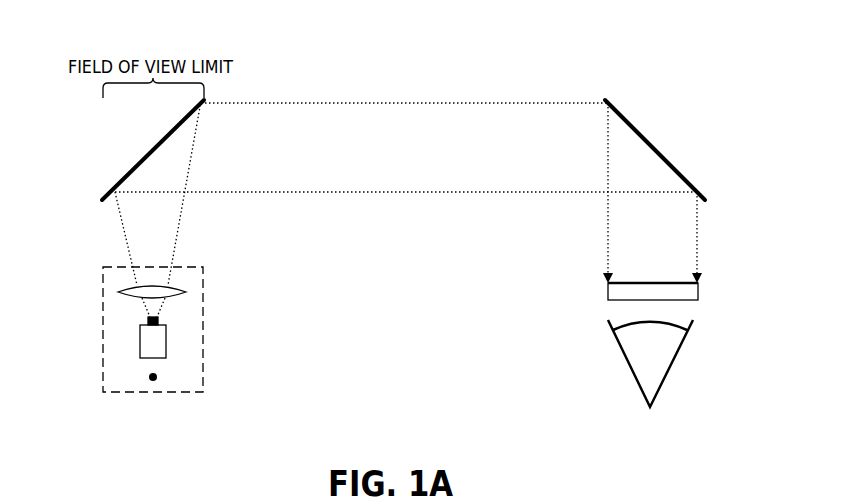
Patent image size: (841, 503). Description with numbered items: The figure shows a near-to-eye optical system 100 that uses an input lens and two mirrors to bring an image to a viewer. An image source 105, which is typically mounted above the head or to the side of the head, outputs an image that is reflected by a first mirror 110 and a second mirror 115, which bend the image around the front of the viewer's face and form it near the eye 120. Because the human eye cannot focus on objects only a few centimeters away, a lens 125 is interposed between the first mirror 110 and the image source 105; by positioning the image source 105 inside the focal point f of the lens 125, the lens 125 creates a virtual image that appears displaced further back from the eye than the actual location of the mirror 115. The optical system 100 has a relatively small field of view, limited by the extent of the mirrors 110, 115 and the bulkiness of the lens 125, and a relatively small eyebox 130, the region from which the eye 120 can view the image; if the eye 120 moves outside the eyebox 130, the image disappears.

The near-to-eye optical system 100 is at (410, 248).
The image source 105 is at (140, 342).
The first mirror 110 is at (120, 178).
The second mirror 115 is at (662, 152).
The eye 120 is at (663, 352).
The lens 125 is at (121, 290).
The eyebox 130 is at (699, 292).